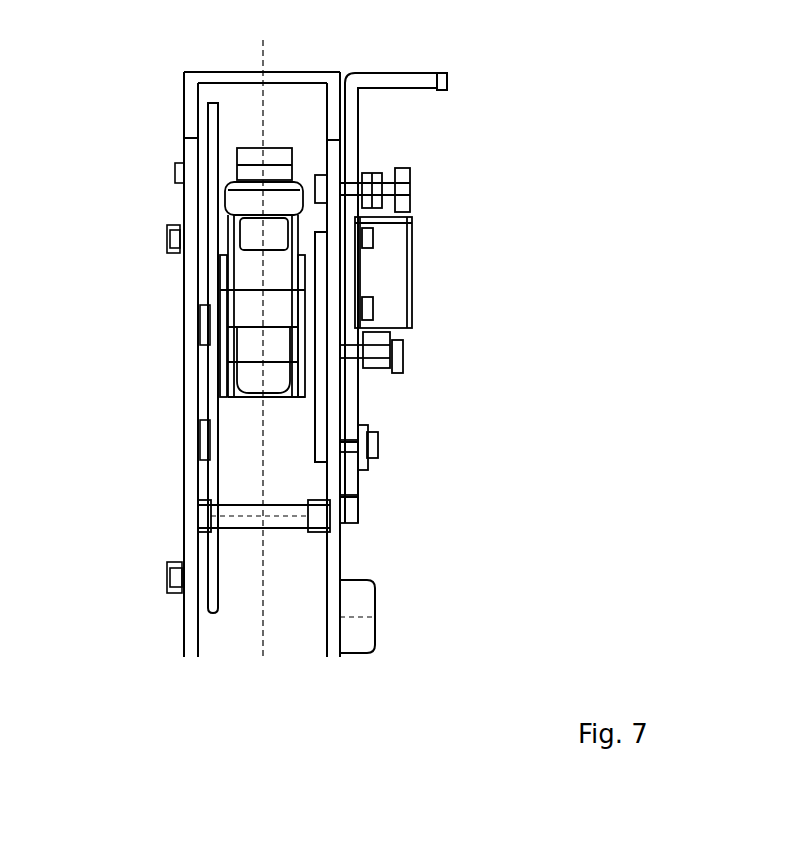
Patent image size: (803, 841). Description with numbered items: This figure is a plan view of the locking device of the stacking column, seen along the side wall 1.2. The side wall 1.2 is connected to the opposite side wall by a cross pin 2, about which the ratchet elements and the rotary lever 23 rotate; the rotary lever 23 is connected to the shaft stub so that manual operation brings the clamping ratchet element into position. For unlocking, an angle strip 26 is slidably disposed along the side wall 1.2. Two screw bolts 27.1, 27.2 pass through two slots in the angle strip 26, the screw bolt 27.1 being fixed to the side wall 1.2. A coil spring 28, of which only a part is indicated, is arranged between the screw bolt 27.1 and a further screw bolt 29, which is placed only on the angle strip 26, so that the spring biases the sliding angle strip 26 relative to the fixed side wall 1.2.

The side wall 1.2 is at (337, 560).
The cross pin 2 is at (213, 523).
The rotary lever 23 is at (207, 213).
The angle strip 26 is at (348, 130).
The screw bolt 27.1 is at (412, 182).
The screw bolt 27.2 is at (378, 448).
The coil spring 28 is at (385, 337).
The screw bolt 29 is at (403, 363).